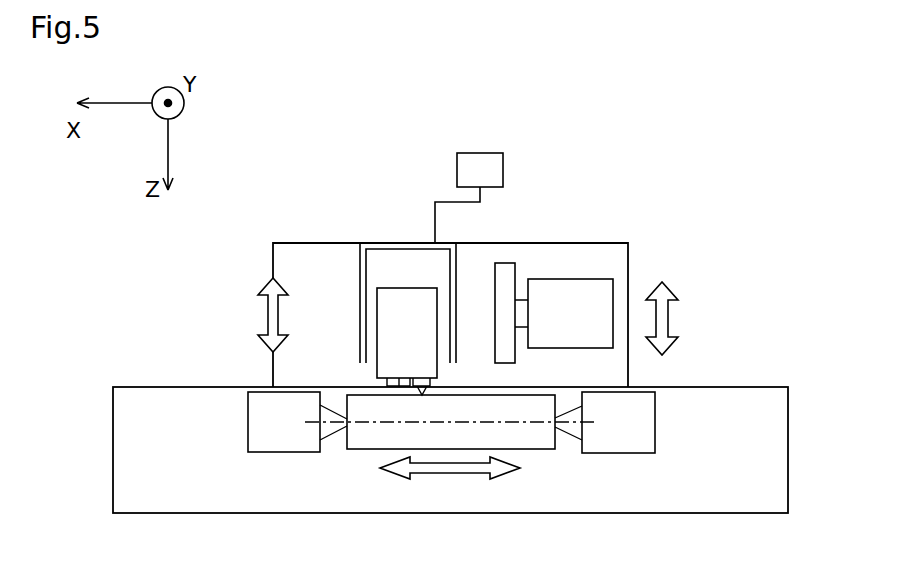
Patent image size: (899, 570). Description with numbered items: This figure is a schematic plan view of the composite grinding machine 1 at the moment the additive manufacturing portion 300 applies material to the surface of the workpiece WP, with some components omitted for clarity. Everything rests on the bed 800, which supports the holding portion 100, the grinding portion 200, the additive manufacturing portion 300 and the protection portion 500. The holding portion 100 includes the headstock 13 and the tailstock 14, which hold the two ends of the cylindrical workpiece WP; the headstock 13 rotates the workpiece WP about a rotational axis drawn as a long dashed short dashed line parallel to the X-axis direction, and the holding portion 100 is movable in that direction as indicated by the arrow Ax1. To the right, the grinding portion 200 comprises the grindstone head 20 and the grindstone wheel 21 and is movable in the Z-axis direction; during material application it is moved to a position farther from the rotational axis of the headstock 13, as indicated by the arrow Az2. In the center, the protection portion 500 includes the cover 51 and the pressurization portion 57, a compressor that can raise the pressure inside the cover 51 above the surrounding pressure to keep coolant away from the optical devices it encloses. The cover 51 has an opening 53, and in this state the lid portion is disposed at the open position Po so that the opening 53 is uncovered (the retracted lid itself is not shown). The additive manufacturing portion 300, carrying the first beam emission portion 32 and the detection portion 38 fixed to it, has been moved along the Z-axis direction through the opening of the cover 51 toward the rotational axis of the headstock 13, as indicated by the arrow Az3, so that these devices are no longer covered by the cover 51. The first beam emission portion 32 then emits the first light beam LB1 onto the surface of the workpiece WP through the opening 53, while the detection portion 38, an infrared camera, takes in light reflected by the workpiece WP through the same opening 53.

The composite grinding machine 1 is at (698, 115).
The headstock 13 is at (282, 453).
The tailstock 14 is at (626, 454).
The grindstone head 20 is at (548, 278).
The grindstone wheel 21 is at (505, 263).
The first beam emission portion 32 is at (422, 386).
The detection portion 38 is at (393, 378).
The cover 51 is at (360, 270).
The opening 53 is at (377, 372).
The pressurization portion 57 is at (503, 170).
The holding portion 100 is at (222, 403).
The grinding portion 200 is at (611, 255).
The additive manufacturing portion 300 is at (443, 290).
The protection portion 500 is at (408, 216).
The bed 800 is at (697, 497).
The arrow indicating movement of the grinding portion Az2 is at (668, 315).
The arrow indicating movement of the additive manufacturing portion Az3 is at (267, 315).
The arrow indicating movement of the holding portion Ax1 is at (450, 473).
The open position Po is at (365, 380).
The workpiece WP is at (538, 445).
The first light beam LB1 is at (430, 391).